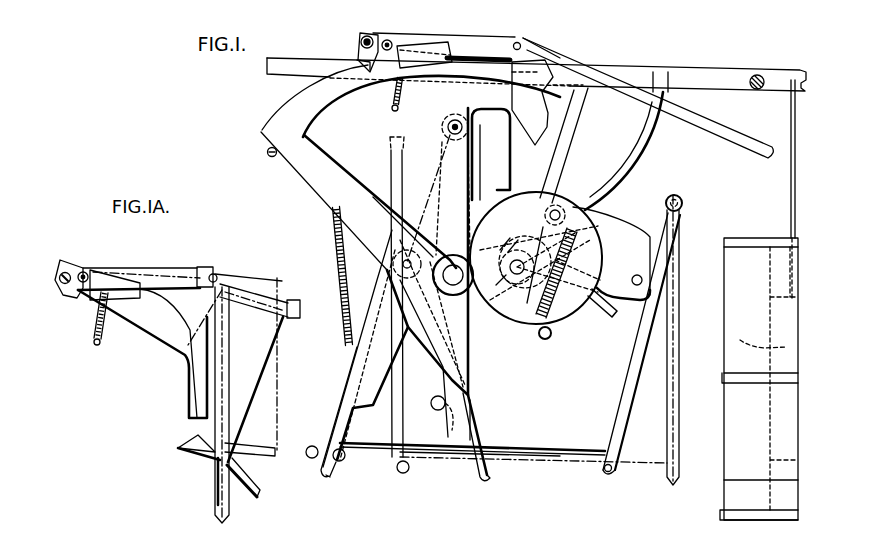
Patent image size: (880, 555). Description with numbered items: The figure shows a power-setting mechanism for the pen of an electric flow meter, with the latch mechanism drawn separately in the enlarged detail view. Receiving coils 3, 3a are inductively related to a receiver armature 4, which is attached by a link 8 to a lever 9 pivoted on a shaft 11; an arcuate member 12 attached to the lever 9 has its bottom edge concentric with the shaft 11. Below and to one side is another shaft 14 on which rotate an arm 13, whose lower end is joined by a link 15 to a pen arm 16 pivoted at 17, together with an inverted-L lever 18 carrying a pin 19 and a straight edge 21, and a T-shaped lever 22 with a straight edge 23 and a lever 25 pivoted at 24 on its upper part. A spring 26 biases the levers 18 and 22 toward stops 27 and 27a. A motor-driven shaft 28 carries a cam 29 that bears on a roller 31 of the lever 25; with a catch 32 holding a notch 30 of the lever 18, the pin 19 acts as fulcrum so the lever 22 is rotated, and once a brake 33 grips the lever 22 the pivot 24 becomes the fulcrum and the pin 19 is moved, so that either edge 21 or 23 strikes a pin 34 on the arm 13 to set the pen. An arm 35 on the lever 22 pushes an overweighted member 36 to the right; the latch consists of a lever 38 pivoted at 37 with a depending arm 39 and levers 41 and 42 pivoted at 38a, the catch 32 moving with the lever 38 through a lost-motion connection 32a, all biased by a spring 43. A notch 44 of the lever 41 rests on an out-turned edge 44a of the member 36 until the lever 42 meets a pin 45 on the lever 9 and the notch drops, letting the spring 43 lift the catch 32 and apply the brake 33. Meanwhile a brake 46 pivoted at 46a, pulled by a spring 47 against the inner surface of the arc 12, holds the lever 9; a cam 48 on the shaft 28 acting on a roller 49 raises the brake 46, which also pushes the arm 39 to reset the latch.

In FIG. 1, the receiving coil 3 is at (727, 286).
In FIG. 1, the receiving coil 3a is at (736, 418).
In FIG. 1, the receiver armature 4 is at (740, 340).
In FIG. 1, the link 8 is at (790, 188).
In FIG. 1, the lever 9 is at (686, 70).
In FIG. 1A, the lever 9 is at (299, 303).
In FIG. 1, the shaft 11 is at (542, 50).
In FIG. 1A, the shaft 11 is at (232, 275).
In FIG. 1, the arcuate member 12 is at (627, 170).
In FIG. 1, the arm 13 is at (351, 433).
In FIG. 1, the shaft 14 is at (387, 270).
In FIG. 1, the link 15 is at (523, 444).
In FIG. 1, the pen arm 16 is at (622, 392).
In FIG. 1, the pivot 17 is at (679, 199).
In FIG. 1, the lever 18 is at (328, 163).
In FIG. 1, the pin 19 is at (435, 412).
In FIG. 1, the straight edge 21 is at (477, 467).
In FIG. 1, the lever 22 is at (345, 395).
In FIG. 1, the straight edge 23 is at (329, 479).
In FIG. 1, the pivot 24 is at (448, 127).
In FIG. 1, the lever 25 is at (466, 359).
In FIG. 1, the spring 26 is at (332, 259).
In FIG. 1, the stop 27 is at (270, 157).
In FIG. 1, the stop 27a is at (309, 446).
In FIG. 1, the shaft 28 is at (517, 276).
In FIG. 1, the cam 29 is at (545, 341).
In FIG. 1, the notch 30 is at (363, 62).
In FIG. 1, the roller 31 is at (381, 204).
In FIG. 1, the catch 32 is at (372, 74).
In FIG. 1A, the catch 32 is at (75, 300).
In FIG. 1, the lost motion connection 32a is at (360, 40).
In FIG. 1A, the lost motion connection 32a is at (60, 272).
In FIG. 1, the brake 33 is at (432, 45).
In FIG. 1A, the brake 33 is at (120, 282).
In FIG. 1, the pin 34 is at (346, 463).
In FIG. 1, the arm 35 is at (613, 320).
In FIG. 1A, the arm 35 is at (259, 496).
In FIG. 1, the overweighted member 36 is at (565, 127).
In FIG. 1A, the overweighted member 36 is at (250, 386).
In FIG. 1, the pivot 37 is at (391, 42).
In FIG. 1A, the pivot 37 is at (88, 272).
In FIG. 1, the lever 38 is at (464, 40).
In FIG. 1A, the lever 38 is at (183, 268).
In FIG. 1, the pivot 38a is at (518, 43).
In FIG. 1A, the pivot 38a is at (218, 275).
In FIG. 1, the depending arm 39 is at (506, 152).
In FIG. 1A, the depending arm 39 is at (200, 383).
In FIG. 1, the lever 41 is at (524, 95).
In FIG. 1A, the lever 41 is at (219, 356).
In FIG. 1, the lever 42 is at (747, 140).
In FIG. 1A, the lever 42 is at (300, 313).
In FIG. 1, the spring 43 is at (404, 99).
In FIG. 1A, the spring 43 is at (103, 343).
In FIG. 1A, the notch 44 is at (200, 448).
In FIG. 1A, the out turned edge 44a is at (245, 460).
In FIG. 1, the pin 45 is at (757, 75).
In FIG. 1, the brake 46 is at (636, 232).
In FIG. 1, the pivot 46a is at (636, 274).
In FIG. 1, the spring 47 is at (554, 312).
In FIG. 1, the cam 48 is at (477, 305).
In FIG. 1, the roller 49 is at (560, 207).